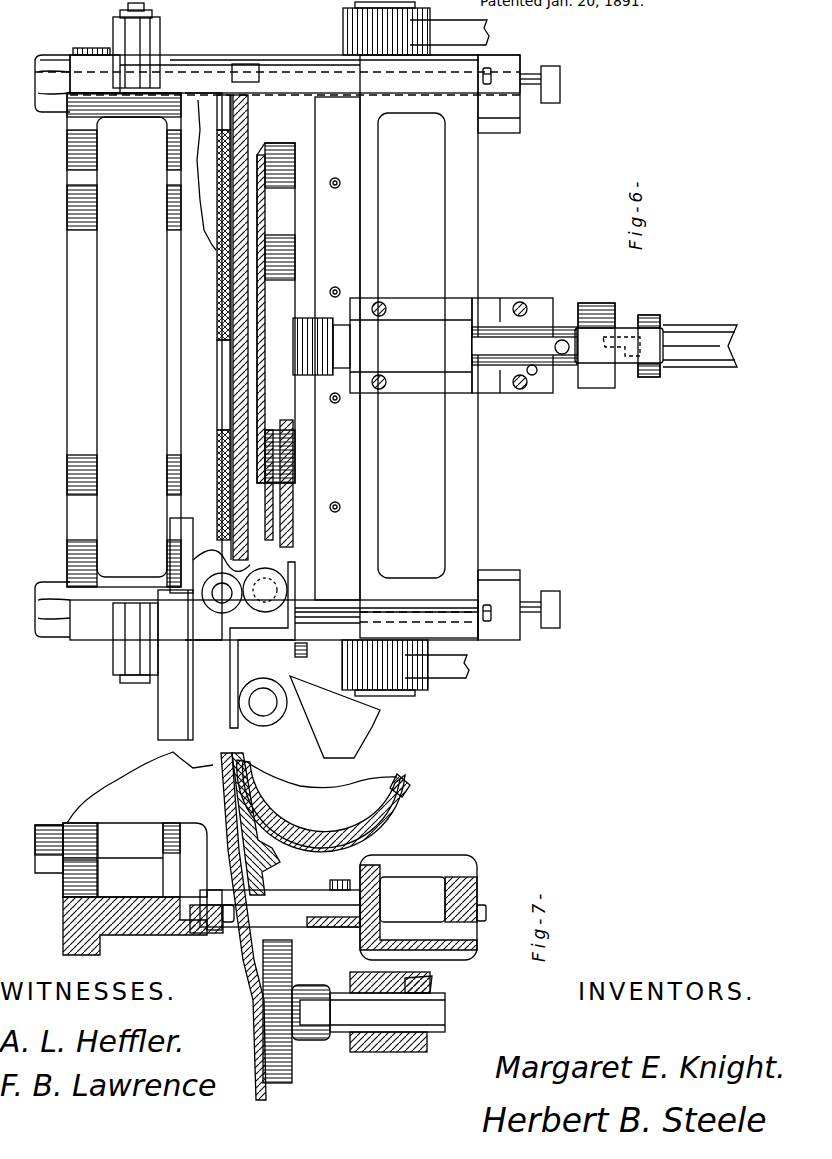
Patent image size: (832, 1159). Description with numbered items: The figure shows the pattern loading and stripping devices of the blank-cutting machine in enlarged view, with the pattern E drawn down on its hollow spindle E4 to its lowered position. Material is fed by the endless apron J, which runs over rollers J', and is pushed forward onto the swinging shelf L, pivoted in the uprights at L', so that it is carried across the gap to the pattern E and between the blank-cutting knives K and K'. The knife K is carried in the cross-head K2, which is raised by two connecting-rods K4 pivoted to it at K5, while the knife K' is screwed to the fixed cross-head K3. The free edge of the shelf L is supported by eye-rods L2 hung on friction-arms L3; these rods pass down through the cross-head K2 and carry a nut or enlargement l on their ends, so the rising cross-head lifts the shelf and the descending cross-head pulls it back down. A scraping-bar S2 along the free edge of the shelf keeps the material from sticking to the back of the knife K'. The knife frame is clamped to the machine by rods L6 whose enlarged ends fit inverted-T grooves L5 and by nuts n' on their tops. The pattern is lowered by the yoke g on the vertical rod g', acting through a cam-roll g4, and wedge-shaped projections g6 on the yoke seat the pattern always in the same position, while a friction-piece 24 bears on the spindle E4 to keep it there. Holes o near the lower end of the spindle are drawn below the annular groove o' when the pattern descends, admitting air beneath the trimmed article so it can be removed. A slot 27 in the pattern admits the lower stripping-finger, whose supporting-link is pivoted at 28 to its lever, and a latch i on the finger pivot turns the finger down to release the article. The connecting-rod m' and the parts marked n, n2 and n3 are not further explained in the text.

In FIG. 6, the swinging shelf L is at (277, 320).
In FIG. 6, the shelf pivot L' is at (324, 41).
In FIG. 7, the shelf pivot L' is at (243, 895).
In FIG. 6, the eye-rods L2 is at (165, 620).
In FIG. 6, the friction-arms L3 is at (128, 52).
In FIG. 6, the inverted-T grooves L5 is at (552, 84).
In FIG. 6, the rods L6 is at (530, 72).
In FIG. 6, the connecting-rod m' is at (42, 335).
In FIG. 7, the knife K is at (275, 903).
In FIG. 6, the knife K' is at (272, 366).
In FIG. 7, the knife K' is at (238, 926).
In FIG. 6, the cross-head K2 is at (419, 346).
In FIG. 7, the cross-head K2 is at (418, 907).
In FIG. 6, the fixed cross-head K3 is at (80, 332).
In FIG. 7, the fixed cross-head K3 is at (130, 875).
In FIG. 6, the connecting-rods K4 is at (447, 373).
In FIG. 6, the pivot of connecting-rods K5 is at (386, 690).
In FIG. 6, the scraping-bar S2 is at (222, 100).
In FIG. 7, the scraping-bar S2 is at (228, 924).
In FIG. 6, the pattern E is at (303, 302).
In FIG. 7, the pattern E is at (280, 1090).
In FIG. 6, the spindle E4 is at (496, 395).
In FIG. 7, the spindle E4 is at (432, 1020).
In FIG. 6, the holes o is at (562, 368).
In FIG. 6, the annular groove o' is at (528, 390).
In FIG. 6, the yoke g is at (611, 297).
In FIG. 6, the vertical rod g' is at (700, 324).
In FIG. 6, the cam-roll g4 is at (607, 373).
In FIG. 6, the wedge-shaped projections g6 is at (636, 345).
In FIG. 6, the nut or enlargement l is at (488, 66).
In FIG. 7, the nut or enlargement l is at (484, 905).
In FIG. 6, the pin n is at (295, 488).
In FIG. 6, the nuts n' is at (244, 579).
In FIG. 6, the lever plate n2 is at (335, 717).
In FIG. 6, the bracket n3 is at (268, 645).
In FIG. 6, the slot or opening 27 is at (279, 485).
In FIG. 6, the pivot 28 is at (263, 705).
In FIG. 6, the latch i is at (150, 578).
In FIG. 7, the endless belt or apron J is at (216, 853).
In FIG. 7, the rollers J' is at (313, 806).
In FIG. 7, the friction-piece 24 is at (434, 980).